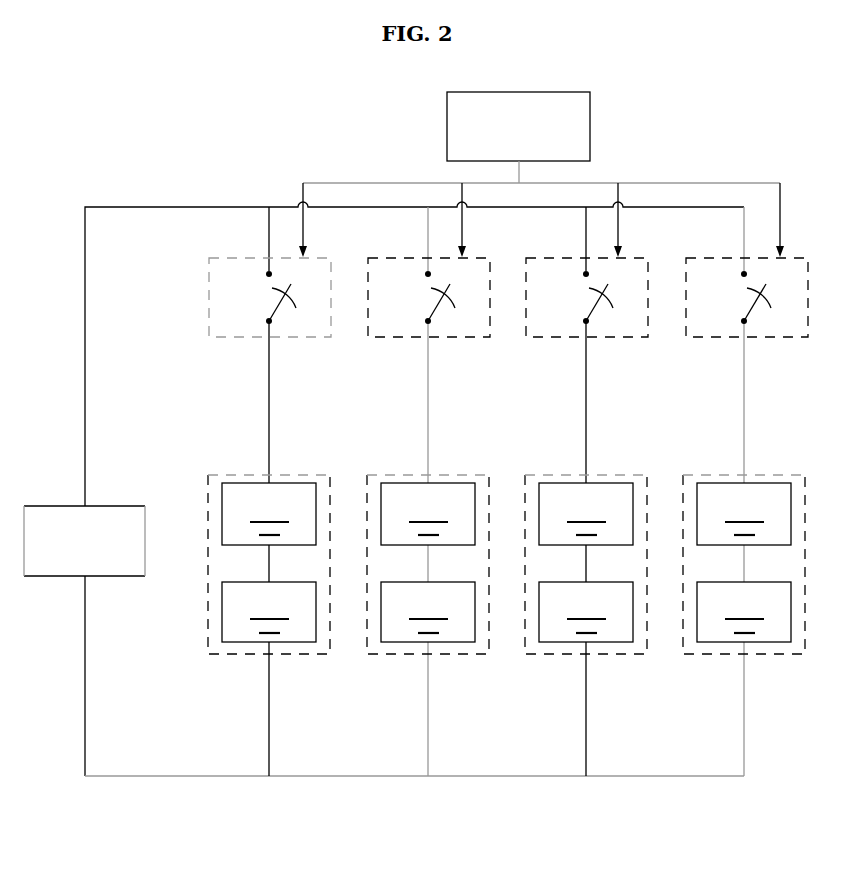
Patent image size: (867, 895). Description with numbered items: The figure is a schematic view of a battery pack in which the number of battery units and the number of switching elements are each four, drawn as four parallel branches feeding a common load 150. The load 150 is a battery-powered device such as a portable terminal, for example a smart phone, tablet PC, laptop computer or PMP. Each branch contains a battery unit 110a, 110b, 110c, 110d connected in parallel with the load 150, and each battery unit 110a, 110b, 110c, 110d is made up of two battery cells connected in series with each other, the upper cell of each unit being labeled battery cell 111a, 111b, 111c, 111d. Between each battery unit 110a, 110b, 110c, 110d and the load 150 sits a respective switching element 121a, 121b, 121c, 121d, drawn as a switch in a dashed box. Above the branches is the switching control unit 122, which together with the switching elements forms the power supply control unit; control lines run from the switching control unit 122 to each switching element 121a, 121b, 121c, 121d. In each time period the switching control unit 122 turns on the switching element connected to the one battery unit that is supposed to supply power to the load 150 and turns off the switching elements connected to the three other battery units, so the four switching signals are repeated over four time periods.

The switching control unit 122 is at (590, 127).
The load 150 is at (128, 578).
The switching element 121a is at (256, 337).
The battery cell 111a is at (222, 500).
The battery unit 110a is at (228, 655).
The switching element 121b is at (413, 337).
The battery cell 111b is at (381, 500).
The battery unit 110b is at (383, 655).
The switching element 121c is at (553, 337).
The battery cell 111c is at (539, 500).
The battery unit 110c is at (553, 655).
The switching element 121d is at (705, 337).
The battery cell 111d is at (697, 500).
The battery unit 110d is at (715, 655).